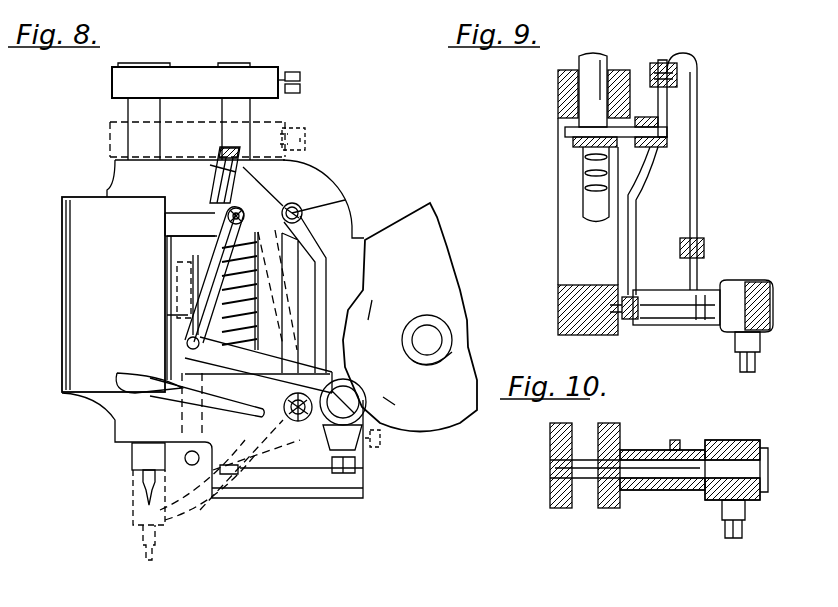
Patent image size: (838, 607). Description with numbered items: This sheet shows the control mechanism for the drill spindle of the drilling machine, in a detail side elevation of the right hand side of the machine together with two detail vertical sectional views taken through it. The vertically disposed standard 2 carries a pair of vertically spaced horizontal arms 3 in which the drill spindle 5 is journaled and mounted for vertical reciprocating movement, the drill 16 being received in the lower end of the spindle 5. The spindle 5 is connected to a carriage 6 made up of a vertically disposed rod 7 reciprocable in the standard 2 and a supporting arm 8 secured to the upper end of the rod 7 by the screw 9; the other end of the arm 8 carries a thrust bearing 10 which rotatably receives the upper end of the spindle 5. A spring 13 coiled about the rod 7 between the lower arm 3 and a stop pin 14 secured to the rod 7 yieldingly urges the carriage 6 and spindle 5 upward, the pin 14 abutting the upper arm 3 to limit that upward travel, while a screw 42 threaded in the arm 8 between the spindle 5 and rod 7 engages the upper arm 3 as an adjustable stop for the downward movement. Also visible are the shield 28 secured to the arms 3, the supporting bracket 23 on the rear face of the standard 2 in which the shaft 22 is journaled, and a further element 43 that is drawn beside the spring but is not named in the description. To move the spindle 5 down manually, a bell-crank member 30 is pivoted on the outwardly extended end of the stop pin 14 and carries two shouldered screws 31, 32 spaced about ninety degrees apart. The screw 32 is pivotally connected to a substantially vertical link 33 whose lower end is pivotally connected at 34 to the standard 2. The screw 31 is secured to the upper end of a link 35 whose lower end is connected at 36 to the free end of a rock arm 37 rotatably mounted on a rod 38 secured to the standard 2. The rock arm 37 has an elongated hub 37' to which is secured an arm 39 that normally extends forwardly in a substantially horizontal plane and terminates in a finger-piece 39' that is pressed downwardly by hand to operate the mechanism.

In FIG. 8, the standard 2 is at (320, 184).
In FIG. 9, the standard 2 is at (560, 320).
In FIG. 10, the standard 2 is at (600, 497).
In FIG. 8, the arms 3 is at (110, 190).
In FIG. 8, the drill spindle 5 is at (140, 457).
In FIG. 8, the carriage 6 is at (247, 118).
In FIG. 8, the rod 7 is at (240, 63).
In FIG. 9, the rod 7 is at (605, 58).
In FIG. 8, the supporting arm 8 is at (112, 85).
In FIG. 8, the screw 9 is at (300, 80).
In FIG. 8, the thrust bearing 10 is at (343, 515).
In FIG. 9, the spring 13 is at (585, 175).
In FIG. 8, the stop pin 14 is at (228, 212).
In FIG. 9, the stop pin 14 is at (566, 133).
In FIG. 8, the drill 16 is at (143, 483).
In FIG. 8, the shaft 22 is at (433, 340).
In FIG. 8, the supporting bracket 23 is at (432, 276).
In FIG. 8, the shield 28 is at (80, 288).
In FIG. 8, the bell-crank member 30 is at (253, 193).
In FIG. 9, the bell-crank member 30 is at (668, 104).
In FIG. 8, the shouldered screw 31 is at (210, 172).
In FIG. 9, the shouldered screw 31 is at (648, 68).
In FIG. 8, the shouldered screw 32 is at (302, 209).
In FIG. 8, the link 33 is at (303, 248).
In FIG. 9, the link 33 is at (640, 210).
In FIG. 8, the pivotal connection 34 is at (290, 411).
In FIG. 9, the pivotal connection 34 is at (632, 322).
In FIG. 8, the link 35 is at (212, 224).
In FIG. 9, the link 35 is at (698, 162).
In FIG. 8, the connection 36 is at (186, 345).
In FIG. 9, the connection 36 is at (680, 247).
In FIG. 8, the rock arm 37 is at (258, 365).
In FIG. 9, the rock arm 37 is at (676, 293).
In FIG. 10, the rock arm 37 is at (683, 426).
In FIG. 9, the elongated hub 37' is at (704, 324).
In FIG. 10, the elongated hub 37' is at (720, 482).
In FIG. 10, the rod 38 is at (552, 468).
In FIG. 8, the arm 39 is at (207, 397).
In FIG. 9, the arm 39 is at (746, 310).
In FIG. 10, the arm 39 is at (751, 519).
In FIG. 8, the finger-piece 39' is at (135, 377).
In FIG. 8, the screw 42 is at (196, 100).
In FIG. 8, the spring 43 is at (259, 290).